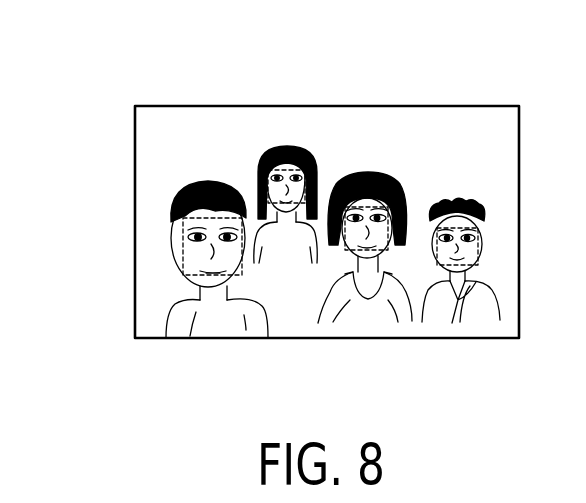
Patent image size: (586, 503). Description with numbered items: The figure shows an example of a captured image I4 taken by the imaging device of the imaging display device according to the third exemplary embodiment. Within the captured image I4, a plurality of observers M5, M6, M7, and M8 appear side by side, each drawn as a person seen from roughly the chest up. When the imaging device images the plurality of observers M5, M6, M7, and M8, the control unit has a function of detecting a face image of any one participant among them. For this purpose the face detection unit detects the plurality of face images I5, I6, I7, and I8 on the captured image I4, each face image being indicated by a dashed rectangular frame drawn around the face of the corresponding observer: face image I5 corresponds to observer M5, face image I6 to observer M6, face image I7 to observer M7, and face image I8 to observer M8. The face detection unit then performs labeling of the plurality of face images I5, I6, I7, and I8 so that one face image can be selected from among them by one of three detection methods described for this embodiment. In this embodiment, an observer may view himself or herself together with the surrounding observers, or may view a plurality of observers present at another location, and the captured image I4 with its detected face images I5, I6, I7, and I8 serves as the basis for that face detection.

The captured image I4 is at (150, 105).
The observer M5 is at (210, 182).
The observer M6 is at (287, 146).
The observer M7 is at (370, 172).
The observer M8 is at (462, 201).
The face image I5 is at (183, 250).
The face image I6 is at (286, 208).
The face image I7 is at (366, 257).
The face image I8 is at (478, 252).